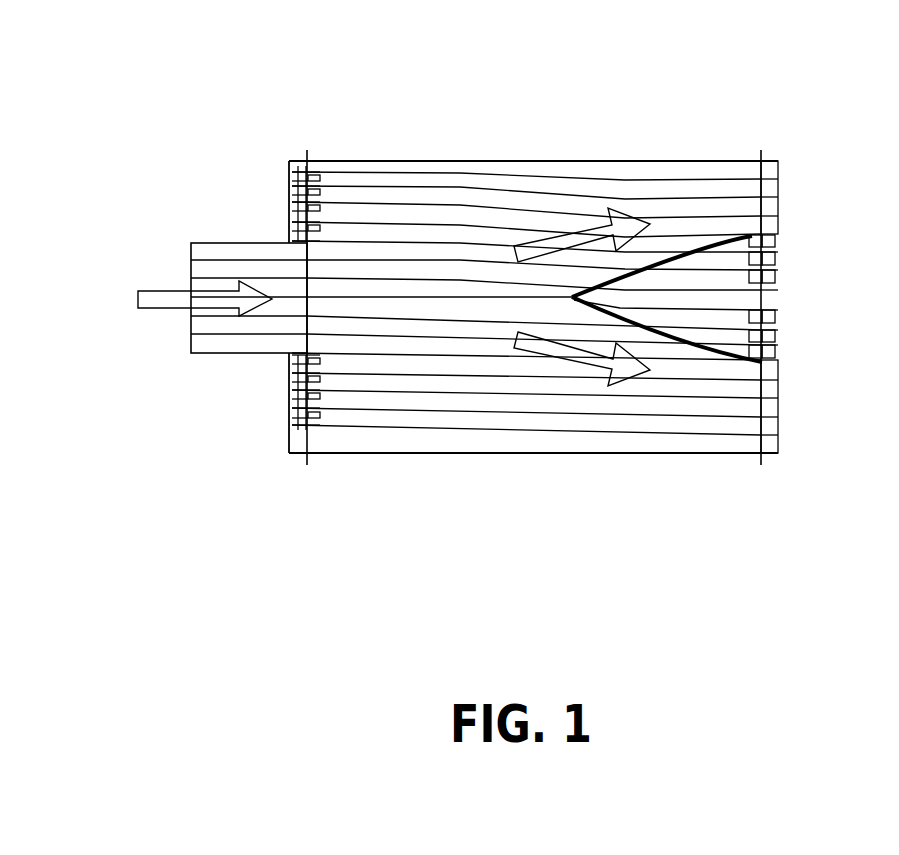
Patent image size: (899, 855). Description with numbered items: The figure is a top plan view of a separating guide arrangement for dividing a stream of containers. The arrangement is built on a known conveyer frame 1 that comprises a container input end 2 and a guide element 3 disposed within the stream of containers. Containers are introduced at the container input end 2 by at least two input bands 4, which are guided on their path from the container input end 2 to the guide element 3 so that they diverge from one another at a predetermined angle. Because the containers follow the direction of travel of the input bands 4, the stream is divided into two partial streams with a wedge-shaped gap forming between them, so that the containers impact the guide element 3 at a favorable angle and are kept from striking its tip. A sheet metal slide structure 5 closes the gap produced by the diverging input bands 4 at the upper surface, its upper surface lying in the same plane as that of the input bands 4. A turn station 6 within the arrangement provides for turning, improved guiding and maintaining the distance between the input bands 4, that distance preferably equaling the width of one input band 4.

The conveyer frame 1 is at (395, 160).
The container input end 2 is at (284, 243).
The guide element 3 is at (688, 345).
The input bands 4 is at (276, 327).
The sheet metal slide structure 5 is at (708, 300).
The turn station 6 is at (776, 246).